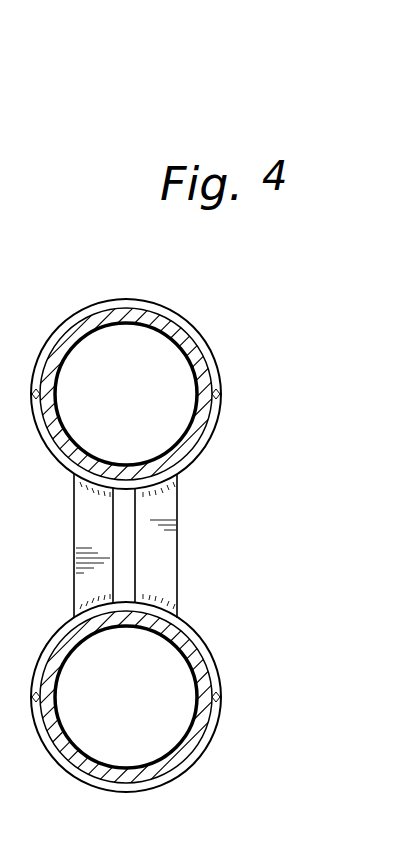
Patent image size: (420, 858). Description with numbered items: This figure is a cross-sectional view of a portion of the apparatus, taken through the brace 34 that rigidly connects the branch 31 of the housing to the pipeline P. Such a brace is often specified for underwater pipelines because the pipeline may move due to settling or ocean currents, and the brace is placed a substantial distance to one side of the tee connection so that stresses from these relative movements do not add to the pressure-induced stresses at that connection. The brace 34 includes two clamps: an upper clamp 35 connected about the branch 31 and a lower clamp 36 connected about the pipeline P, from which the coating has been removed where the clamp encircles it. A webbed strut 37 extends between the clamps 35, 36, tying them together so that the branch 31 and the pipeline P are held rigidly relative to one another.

The clamp 35 is at (187, 320).
The branch 31 is at (197, 362).
The brace 34 is at (160, 514).
The webbed strut 37 is at (128, 568).
The clamp 36 is at (208, 744).
The inner ring member of lower ring P is at (197, 663).